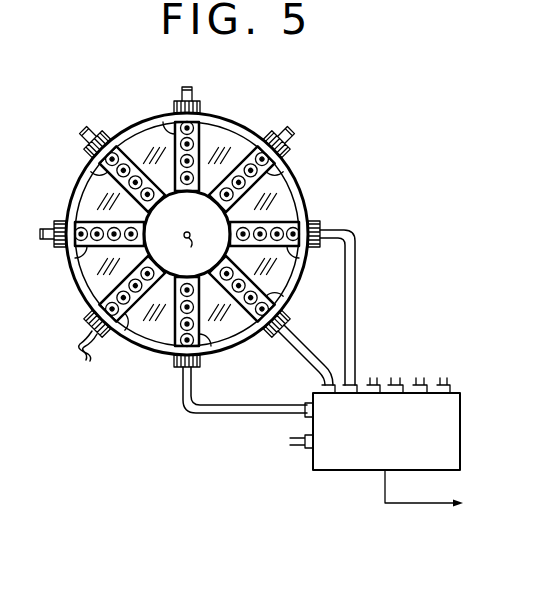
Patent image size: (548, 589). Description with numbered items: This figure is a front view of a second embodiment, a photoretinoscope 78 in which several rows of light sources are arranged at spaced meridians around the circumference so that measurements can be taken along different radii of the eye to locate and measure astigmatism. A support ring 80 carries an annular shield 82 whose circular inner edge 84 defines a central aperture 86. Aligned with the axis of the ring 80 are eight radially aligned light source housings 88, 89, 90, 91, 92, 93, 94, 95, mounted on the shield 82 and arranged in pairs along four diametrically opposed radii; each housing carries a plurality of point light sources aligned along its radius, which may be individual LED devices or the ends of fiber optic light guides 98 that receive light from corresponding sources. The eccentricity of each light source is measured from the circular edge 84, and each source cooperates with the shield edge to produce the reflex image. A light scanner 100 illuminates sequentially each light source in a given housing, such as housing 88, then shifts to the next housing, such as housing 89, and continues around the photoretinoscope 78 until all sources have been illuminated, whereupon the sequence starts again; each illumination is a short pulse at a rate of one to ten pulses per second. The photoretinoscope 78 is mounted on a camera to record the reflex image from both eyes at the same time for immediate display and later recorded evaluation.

The photoretinoscope 78 is at (311, 91).
The support ring 80 is at (172, 234).
The annular shield 82 is at (223, 138).
The circular inner edge 84 is at (228, 252).
The central aperture 86 is at (226, 220).
The light source housing 88 is at (217, 375).
The light source housing 89 is at (100, 297).
The light source housing 90 is at (78, 262).
The light source housing 91 is at (124, 150).
The light source housing 92 is at (172, 138).
The light source housing 93 is at (287, 172).
The light source housing 94 is at (304, 214).
The light source housing 95 is at (258, 340).
The fiber optic cable 98 is at (356, 256).
The light scanner 100 is at (334, 471).